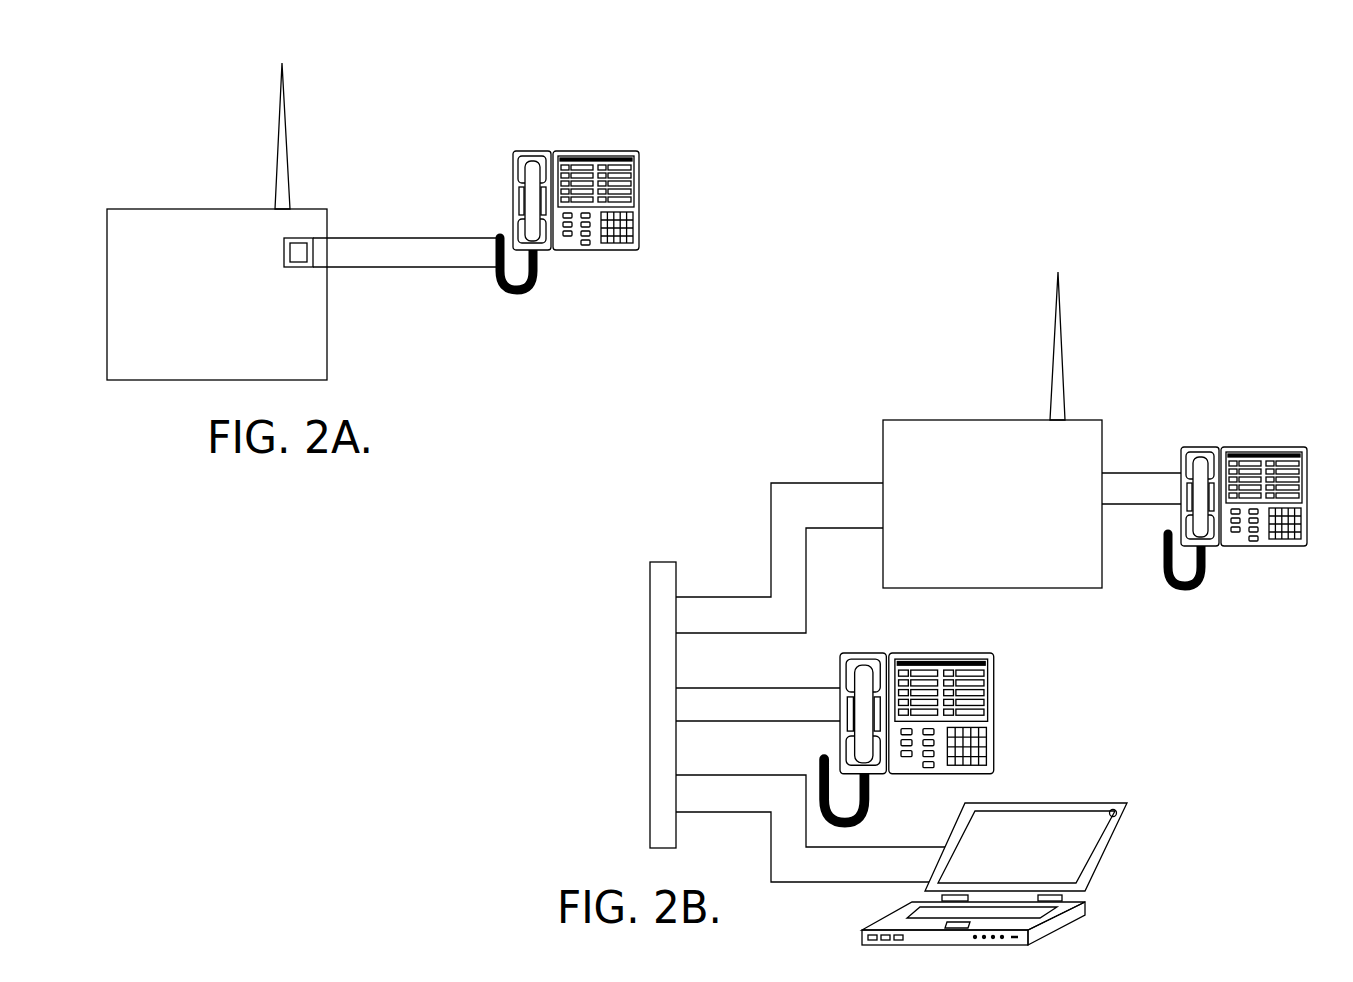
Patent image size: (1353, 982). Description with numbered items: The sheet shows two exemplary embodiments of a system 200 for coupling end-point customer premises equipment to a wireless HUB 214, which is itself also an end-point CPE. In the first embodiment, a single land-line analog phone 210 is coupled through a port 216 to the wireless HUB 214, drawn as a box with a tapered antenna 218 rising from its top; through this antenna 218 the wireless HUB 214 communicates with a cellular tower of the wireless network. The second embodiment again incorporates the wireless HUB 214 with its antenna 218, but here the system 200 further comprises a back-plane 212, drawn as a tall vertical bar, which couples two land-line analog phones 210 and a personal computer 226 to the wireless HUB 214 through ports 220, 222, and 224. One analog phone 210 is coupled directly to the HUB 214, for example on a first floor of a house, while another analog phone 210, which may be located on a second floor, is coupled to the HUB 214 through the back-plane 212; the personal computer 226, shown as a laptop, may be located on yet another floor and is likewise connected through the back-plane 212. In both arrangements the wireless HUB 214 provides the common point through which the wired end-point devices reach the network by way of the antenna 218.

In FIG. 2A, the system 200 is at (420, 161).
In FIG. 2B, the system 200 is at (1212, 328).
In FIG. 2A, the land-line analog phone 210 is at (640, 193).
In FIG. 2B, the land-line analog phone 210 is at (1240, 447).
In FIG. 2B, the back-plane 212 is at (650, 678).
In FIG. 2A, the wireless HUB 214 is at (206, 209).
In FIG. 2B, the wireless HUB 214 is at (935, 420).
In FIG. 2A, the port 216 is at (283, 249).
In FIG. 2A, the antenna 218 is at (288, 155).
In FIG. 2B, the antenna 218 is at (1062, 343).
In FIG. 2B, the port 220 is at (678, 596).
In FIG. 2B, the port 222 is at (678, 687).
In FIG. 2B, the port 224 is at (678, 774).
In FIG. 2B, the personal computer 226 is at (1110, 833).